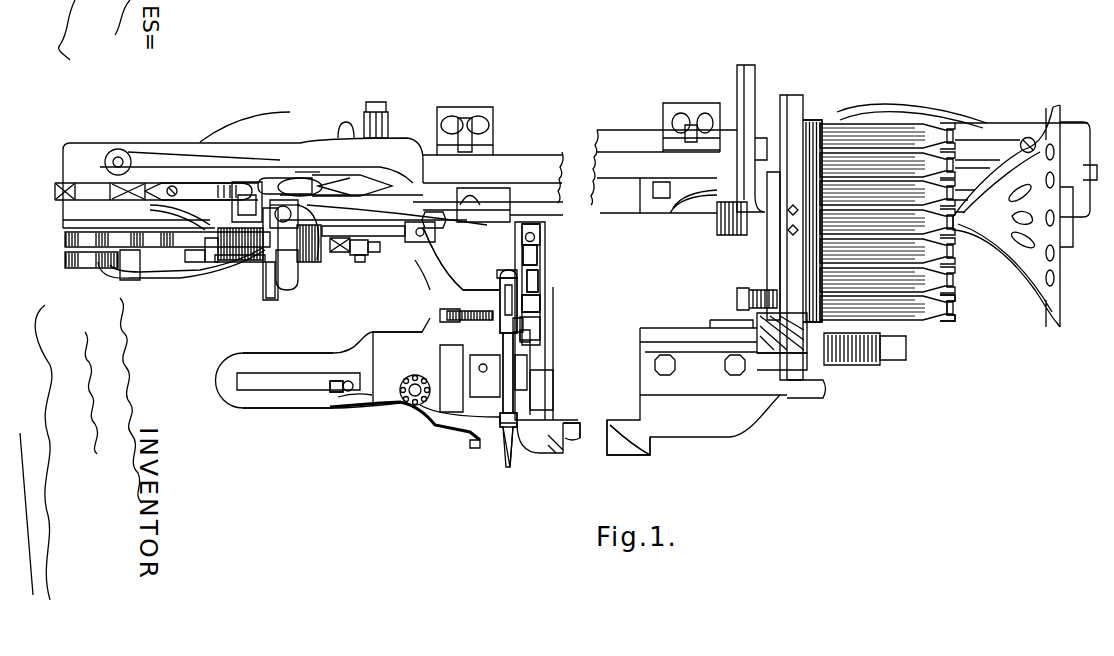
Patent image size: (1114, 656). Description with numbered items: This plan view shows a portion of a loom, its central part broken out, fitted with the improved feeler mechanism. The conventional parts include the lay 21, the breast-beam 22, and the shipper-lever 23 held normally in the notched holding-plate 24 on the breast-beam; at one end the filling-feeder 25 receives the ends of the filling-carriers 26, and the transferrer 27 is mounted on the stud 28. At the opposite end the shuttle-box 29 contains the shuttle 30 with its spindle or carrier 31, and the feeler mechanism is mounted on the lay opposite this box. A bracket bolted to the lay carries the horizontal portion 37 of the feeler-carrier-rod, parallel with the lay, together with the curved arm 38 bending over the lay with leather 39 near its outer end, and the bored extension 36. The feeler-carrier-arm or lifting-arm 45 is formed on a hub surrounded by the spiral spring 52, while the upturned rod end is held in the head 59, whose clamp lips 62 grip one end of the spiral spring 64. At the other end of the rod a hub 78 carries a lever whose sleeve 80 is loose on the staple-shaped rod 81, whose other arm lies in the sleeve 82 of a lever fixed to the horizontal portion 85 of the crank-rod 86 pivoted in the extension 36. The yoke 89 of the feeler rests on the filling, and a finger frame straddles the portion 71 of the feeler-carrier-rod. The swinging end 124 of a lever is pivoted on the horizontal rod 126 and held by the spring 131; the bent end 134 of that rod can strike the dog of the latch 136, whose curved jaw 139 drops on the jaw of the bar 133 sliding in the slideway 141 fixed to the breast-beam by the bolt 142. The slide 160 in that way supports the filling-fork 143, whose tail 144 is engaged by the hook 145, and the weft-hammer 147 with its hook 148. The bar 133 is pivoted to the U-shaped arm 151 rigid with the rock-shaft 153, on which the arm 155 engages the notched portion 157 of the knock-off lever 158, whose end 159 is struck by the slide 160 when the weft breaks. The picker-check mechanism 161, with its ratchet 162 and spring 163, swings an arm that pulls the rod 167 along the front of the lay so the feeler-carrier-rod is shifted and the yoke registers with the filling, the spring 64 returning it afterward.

The lay 21 is at (593, 158).
The breast-beam 22 is at (440, 320).
The shipper-lever 23 is at (342, 393).
The notched holding-plate 24 is at (272, 408).
The filling-feeder 25 is at (806, 122).
The filling-carriers 26 is at (945, 308).
The transferrer 27 is at (838, 366).
The stud 28 is at (895, 362).
The shuttle-box 29 is at (255, 178).
The shuttle 30 is at (308, 167).
The spindle or carrier 31 is at (281, 175).
The upward extension 36 is at (416, 243).
The horizontal portion of the feeler-carrier-rod 37 is at (342, 252).
The curved arm 38 is at (311, 262).
The leather 39 is at (265, 262).
The feeler-carrier-arm or lifting-arm 45 is at (273, 270).
The spiral spring 52 is at (290, 290).
The head 59 is at (212, 260).
The ends of the clamp 62 is at (232, 262).
The spiral spring 64 is at (250, 262).
The portion of the feeler-carrier-rod 71 is at (195, 262).
The hub 78 is at (354, 255).
The sleeve 80 is at (374, 253).
The staple-shaped rod 81 is at (360, 262).
The sleeve 82 is at (338, 224).
The horizontal portion of the crank-rod 85 is at (385, 237).
The crank-rod 86 is at (437, 266).
The yoke 89 is at (245, 182).
The swinging end of the lever 124 is at (500, 305).
The horizontal rod 126 is at (447, 322).
The spiral spring 131 is at (472, 322).
The bar 133 is at (516, 358).
The extreme end of the rod 134 is at (518, 322).
The latch 136 is at (522, 336).
The downwardly curved jaw 139 is at (500, 292).
The slideway 141 is at (520, 373).
The bolt 142 is at (483, 373).
The weft or filling-fork 143 is at (531, 235).
The tail 144 is at (530, 271).
The hook 145 is at (533, 258).
The weft-hammer 147 is at (537, 305).
The hook 148 is at (505, 278).
The U-shaped arm 151 is at (509, 466).
The rock-shaft 153 is at (607, 442).
The arm 155 is at (500, 442).
The notched portion 157 is at (472, 448).
The knock-off lever 158 is at (434, 427).
The extreme end of the knock-off lever 159 is at (555, 420).
The slide 160 is at (536, 390).
The picker-check mechanism 161 is at (128, 272).
The ratchet 162 is at (66, 242).
The spring 163 is at (66, 262).
The rod 167 is at (156, 280).